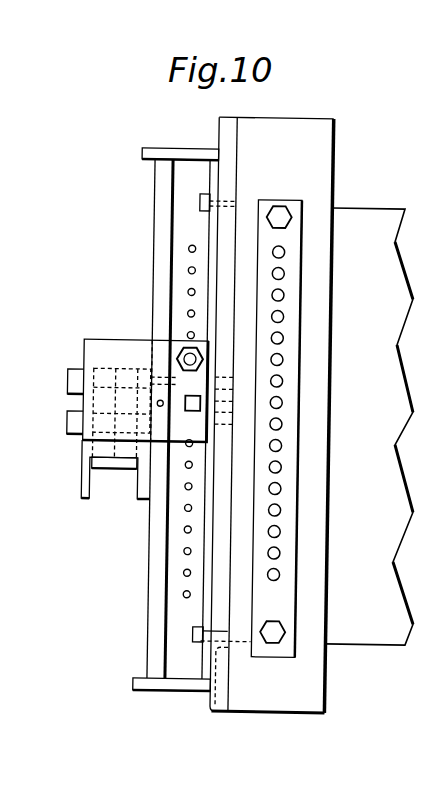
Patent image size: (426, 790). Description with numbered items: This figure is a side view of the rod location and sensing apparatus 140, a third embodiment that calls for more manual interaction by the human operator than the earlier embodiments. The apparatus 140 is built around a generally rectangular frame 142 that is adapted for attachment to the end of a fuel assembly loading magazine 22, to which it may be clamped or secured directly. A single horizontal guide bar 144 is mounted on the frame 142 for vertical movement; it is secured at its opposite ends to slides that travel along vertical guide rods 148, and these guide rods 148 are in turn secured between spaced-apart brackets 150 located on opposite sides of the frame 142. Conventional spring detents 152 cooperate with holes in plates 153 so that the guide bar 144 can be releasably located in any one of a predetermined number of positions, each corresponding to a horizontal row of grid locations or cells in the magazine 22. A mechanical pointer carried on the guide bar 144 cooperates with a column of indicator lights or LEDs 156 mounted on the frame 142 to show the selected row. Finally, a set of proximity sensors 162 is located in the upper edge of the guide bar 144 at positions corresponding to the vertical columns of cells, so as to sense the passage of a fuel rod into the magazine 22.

The rod location and sensing apparatus 140 is at (295, 94).
The frame 142 is at (312, 127).
The fuel assembly loading magazine 22 is at (355, 217).
The brackets 150 is at (179, 156).
The vertical guide rods 148 is at (151, 184).
The plates 153 is at (184, 214).
The spring detents 152 is at (187, 356).
The proximity sensors 162 is at (126, 369).
The horizontal guide bar 144 is at (83, 475).
The indicator lights 156 is at (279, 571).